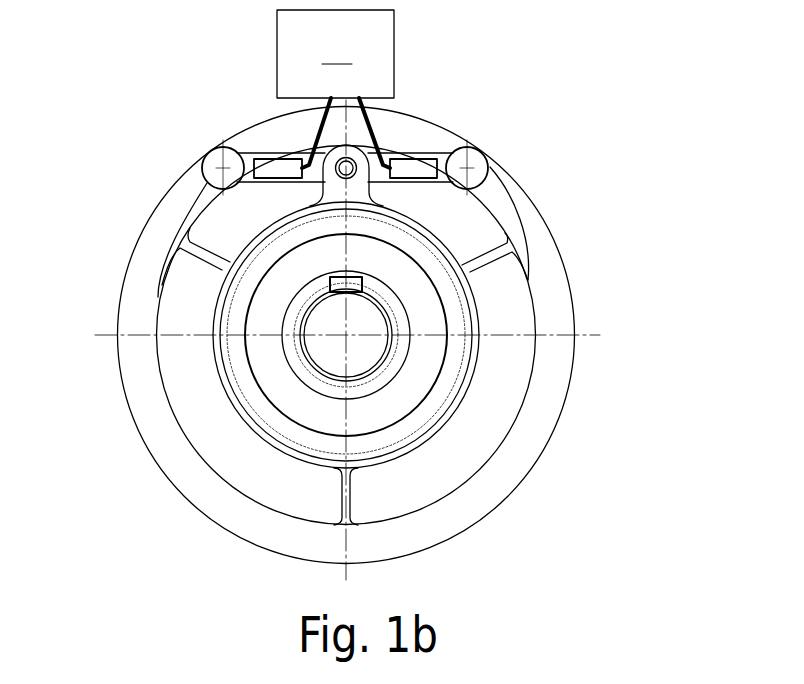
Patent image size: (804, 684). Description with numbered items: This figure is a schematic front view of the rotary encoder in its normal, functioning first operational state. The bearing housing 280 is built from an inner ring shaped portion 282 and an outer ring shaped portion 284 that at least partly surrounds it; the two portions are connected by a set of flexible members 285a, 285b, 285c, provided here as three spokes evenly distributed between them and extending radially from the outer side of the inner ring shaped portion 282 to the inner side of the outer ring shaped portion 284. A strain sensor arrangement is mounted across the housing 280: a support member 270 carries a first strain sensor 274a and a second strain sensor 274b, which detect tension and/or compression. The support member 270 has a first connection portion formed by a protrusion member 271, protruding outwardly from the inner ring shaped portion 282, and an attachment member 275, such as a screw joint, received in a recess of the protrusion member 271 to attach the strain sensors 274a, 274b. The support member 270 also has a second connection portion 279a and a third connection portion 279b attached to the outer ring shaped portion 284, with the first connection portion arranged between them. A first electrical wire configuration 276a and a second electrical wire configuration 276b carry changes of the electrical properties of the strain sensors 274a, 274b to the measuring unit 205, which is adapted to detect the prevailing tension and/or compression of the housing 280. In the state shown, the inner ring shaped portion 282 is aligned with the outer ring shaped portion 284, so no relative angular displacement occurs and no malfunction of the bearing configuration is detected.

The measuring unit 205 is at (335, 54).
The support member 270 is at (208, 155).
The protrusion member 271 is at (333, 198).
The first strain sensor 274a is at (480, 200).
The second strain sensor 274b is at (218, 193).
The attachment member 275 is at (350, 170).
The first electrical wire configuration 276a is at (373, 138).
The second electrical wire configuration 276b is at (328, 107).
The second connection portion 279a is at (515, 186).
The third connection portion 279b is at (202, 166).
The bearing housing 280 is at (552, 408).
The inner ring shaped portion 282 is at (217, 357).
The outer ring shaped portion 284 is at (205, 487).
The flexible member 285a is at (522, 256).
The flexible member 285b is at (349, 517).
The flexible member 285c is at (186, 246).